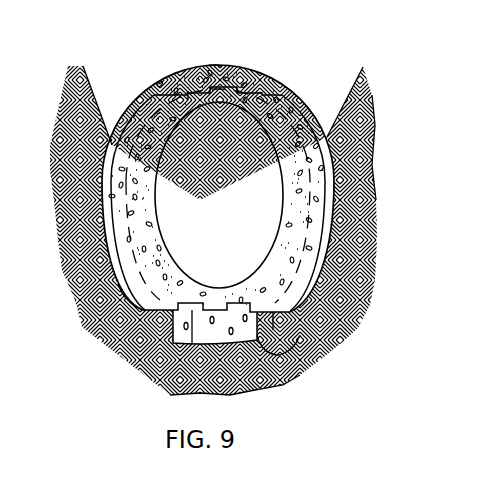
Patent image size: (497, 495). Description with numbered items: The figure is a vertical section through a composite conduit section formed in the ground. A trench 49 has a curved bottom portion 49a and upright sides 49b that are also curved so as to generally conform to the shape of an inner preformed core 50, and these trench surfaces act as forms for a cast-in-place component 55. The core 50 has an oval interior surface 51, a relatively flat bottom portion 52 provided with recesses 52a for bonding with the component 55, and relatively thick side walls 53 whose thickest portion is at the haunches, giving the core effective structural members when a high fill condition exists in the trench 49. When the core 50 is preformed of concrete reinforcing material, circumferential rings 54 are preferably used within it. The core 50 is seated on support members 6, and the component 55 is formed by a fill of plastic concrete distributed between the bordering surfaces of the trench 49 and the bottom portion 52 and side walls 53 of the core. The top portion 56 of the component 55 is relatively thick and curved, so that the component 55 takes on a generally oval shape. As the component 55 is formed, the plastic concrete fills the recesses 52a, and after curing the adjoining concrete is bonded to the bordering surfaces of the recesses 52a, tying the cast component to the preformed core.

The support members 6 is at (291, 341).
The trench 49 is at (80, 64).
The curved bottom portion 49a is at (282, 366).
The upright sides 49b is at (364, 138).
The inner preformed core 50 is at (171, 99).
The oval interior surface 51 is at (274, 146).
The relatively flat bottom portion 52 is at (142, 313).
The recesses 52a is at (248, 97).
The side walls 53 is at (112, 298).
The circumferential rings 54 is at (333, 216).
The cast-in-place component 55 is at (214, 65).
The top portion 56 is at (231, 67).